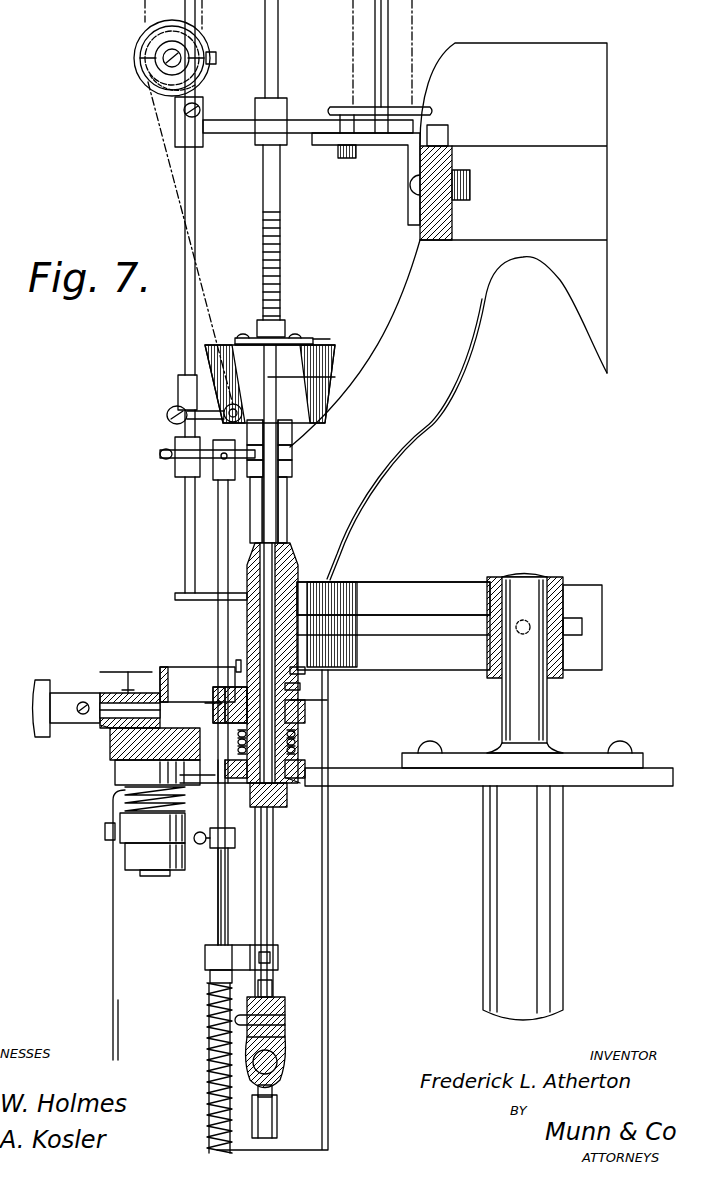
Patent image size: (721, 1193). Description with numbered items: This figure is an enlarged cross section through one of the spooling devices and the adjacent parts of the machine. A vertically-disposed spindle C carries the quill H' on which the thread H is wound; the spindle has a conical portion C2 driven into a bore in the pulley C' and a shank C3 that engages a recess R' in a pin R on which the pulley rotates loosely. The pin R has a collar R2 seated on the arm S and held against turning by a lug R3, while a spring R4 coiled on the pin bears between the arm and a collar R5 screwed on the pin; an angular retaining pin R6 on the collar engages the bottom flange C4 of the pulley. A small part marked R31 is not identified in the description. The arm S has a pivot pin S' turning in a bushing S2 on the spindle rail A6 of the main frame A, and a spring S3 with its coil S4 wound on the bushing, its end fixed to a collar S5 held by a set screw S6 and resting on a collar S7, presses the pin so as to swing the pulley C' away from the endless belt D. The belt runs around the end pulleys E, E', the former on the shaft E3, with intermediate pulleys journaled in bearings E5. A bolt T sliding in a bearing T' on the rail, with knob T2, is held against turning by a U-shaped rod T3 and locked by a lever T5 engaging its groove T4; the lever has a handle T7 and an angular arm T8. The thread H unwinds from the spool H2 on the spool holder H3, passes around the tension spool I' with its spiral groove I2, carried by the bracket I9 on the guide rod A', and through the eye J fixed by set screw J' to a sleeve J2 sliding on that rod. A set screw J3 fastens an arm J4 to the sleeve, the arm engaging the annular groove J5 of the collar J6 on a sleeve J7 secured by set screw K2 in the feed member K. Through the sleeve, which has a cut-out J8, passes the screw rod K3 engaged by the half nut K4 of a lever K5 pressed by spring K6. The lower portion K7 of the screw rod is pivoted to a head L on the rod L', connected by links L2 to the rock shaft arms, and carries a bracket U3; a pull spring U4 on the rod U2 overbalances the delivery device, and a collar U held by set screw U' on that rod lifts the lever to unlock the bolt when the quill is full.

The main frame A is at (412, 596).
The guide rod A' is at (189, 202).
The spindle rail A6 is at (112, 742).
The thread H is at (264, 161).
The quill H' is at (314, 378).
The spool H2 is at (352, 12).
The spool holder H3 is at (390, 48).
The tension spool I' is at (161, 58).
The spiral groove I2 is at (210, 50).
The bracket I9 is at (150, 80).
The eye J is at (215, 396).
The set screw J' is at (149, 414).
The sleeve J2 is at (180, 383).
The set screw J3 is at (175, 455).
The arm J4 is at (215, 465).
The annular groove J5 is at (292, 455).
The collar J6 is at (292, 447).
The sleeve J7 is at (225, 454).
The cut-out portion J8 is at (290, 337).
The feed member K is at (328, 360).
The set screw K2 is at (178, 465).
The screw rod K3 is at (282, 262).
The half nut K4 is at (258, 325).
The lever K5 is at (312, 342).
The spring K6 is at (300, 338).
The lower non-threaded portion K7 is at (275, 895).
The spindle C is at (289, 481).
The pulley C' is at (287, 652).
The conical portion C2 is at (246, 572).
The shank C3 is at (300, 688).
The bottom flange C4 is at (305, 672).
The endless belt D is at (320, 605).
The end pulley E is at (544, 650).
The end pulley E' is at (393, 586).
The shaft E3 is at (540, 725).
The bearings E5 is at (630, 782).
The pin R is at (268, 810).
The recess R' is at (302, 742).
The collar R2 is at (330, 700).
The lug R3 is at (225, 690).
The pawl R31 is at (200, 693).
The spring R4 is at (300, 768).
The collar R5 is at (296, 790).
The retaining pin R6 is at (236, 668).
The arm S is at (290, 705).
The pivot pin S' is at (115, 968).
The bushing S2 is at (150, 810).
The spring S3 is at (214, 790).
The coil S4 is at (125, 795).
The collar S5 is at (157, 801).
The set screw S6 is at (104, 831).
The collar S7 is at (155, 859).
The bolt T is at (130, 675).
The bearing T' is at (122, 687).
The knob T2 is at (42, 683).
The U-shaped rod T3 is at (196, 765).
The annular groove T4 is at (105, 733).
The lever T5 is at (150, 690).
The handle T7 is at (112, 670).
The angular arm T8 is at (176, 665).
The collar U is at (228, 896).
The set screw U' is at (209, 858).
The rod U2 is at (217, 925).
The bracket U3 is at (205, 958).
The spring U4 is at (207, 1098).
The head L is at (266, 1014).
The rod L' is at (302, 1062).
The links L2 is at (278, 1118).